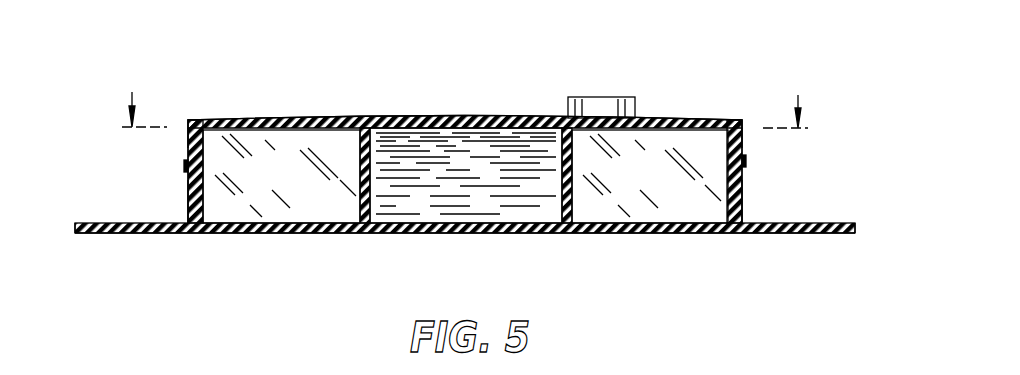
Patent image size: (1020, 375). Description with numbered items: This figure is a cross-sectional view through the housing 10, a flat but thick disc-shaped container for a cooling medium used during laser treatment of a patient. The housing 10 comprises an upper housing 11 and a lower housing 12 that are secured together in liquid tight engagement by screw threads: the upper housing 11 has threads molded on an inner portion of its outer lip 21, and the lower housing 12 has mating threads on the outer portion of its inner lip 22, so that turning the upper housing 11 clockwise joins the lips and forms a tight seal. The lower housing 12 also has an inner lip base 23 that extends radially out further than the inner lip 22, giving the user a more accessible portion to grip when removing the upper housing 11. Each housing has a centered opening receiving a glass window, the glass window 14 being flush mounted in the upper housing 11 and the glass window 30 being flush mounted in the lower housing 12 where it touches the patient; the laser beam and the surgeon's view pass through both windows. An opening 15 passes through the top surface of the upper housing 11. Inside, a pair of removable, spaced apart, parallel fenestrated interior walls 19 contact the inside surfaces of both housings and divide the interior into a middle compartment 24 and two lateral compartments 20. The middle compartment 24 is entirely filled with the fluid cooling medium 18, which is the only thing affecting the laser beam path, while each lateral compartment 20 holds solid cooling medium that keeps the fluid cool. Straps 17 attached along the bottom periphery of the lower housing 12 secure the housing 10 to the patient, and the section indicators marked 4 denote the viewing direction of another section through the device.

The housing 10 is at (308, 30).
The upper housing 11 is at (712, 120).
The lower housing 12 is at (690, 233).
The glass window 14 is at (427, 118).
The opening 15 is at (607, 97).
The straps 17 is at (93, 223).
The fluid cooling medium 18 is at (420, 215).
The interior walls 19 is at (360, 172).
The lateral compartments 20 is at (265, 148).
The outer lip 21 is at (188, 135).
The inner lip 22 is at (185, 160).
The inner lip base 23 is at (188, 196).
The middle compartment 24 is at (477, 170).
The glass window 30 is at (505, 233).
The section line of FIG. 4 is at (465, 95).